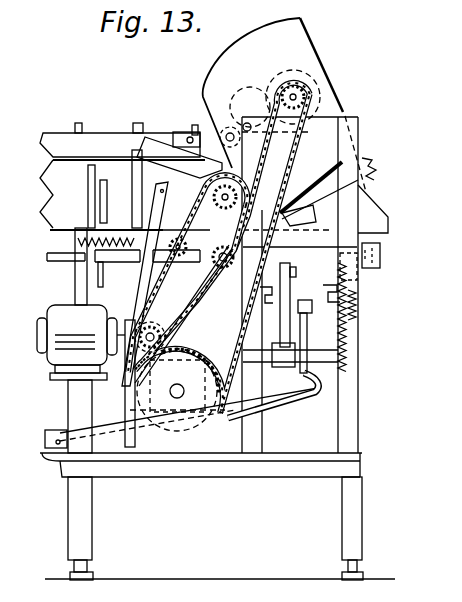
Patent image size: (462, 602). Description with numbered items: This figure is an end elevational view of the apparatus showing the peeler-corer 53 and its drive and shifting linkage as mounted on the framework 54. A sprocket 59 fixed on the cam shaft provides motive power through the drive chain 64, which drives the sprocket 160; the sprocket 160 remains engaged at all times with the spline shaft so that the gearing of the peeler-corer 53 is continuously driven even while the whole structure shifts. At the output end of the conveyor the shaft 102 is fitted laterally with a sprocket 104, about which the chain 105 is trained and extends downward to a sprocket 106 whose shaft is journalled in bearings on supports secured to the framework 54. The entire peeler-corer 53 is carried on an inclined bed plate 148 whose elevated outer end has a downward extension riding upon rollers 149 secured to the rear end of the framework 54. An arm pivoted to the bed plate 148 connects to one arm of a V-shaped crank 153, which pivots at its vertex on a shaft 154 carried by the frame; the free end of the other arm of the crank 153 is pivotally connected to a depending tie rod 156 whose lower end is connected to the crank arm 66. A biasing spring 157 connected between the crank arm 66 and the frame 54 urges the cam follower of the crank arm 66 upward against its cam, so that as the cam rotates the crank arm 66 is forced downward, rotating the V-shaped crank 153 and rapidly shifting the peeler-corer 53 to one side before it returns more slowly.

The peeler-corer 53 is at (351, 52).
The framework 54 is at (396, 412).
The sprocket 59 is at (183, 342).
The drive chain 64 is at (212, 290).
The crank arm 66 is at (283, 398).
The shaft 102 is at (187, 273).
The sprocket 104 is at (210, 194).
The chain 105 is at (147, 298).
The sprocket 106 is at (160, 318).
The inclined bed plate 148 is at (320, 190).
The rollers 149 is at (368, 267).
The V-shaped crank 153 is at (288, 287).
The shaft 154 is at (283, 395).
The tie rod 156 is at (304, 323).
The biasing spring 157 is at (357, 322).
The sprocket 160 is at (300, 91).